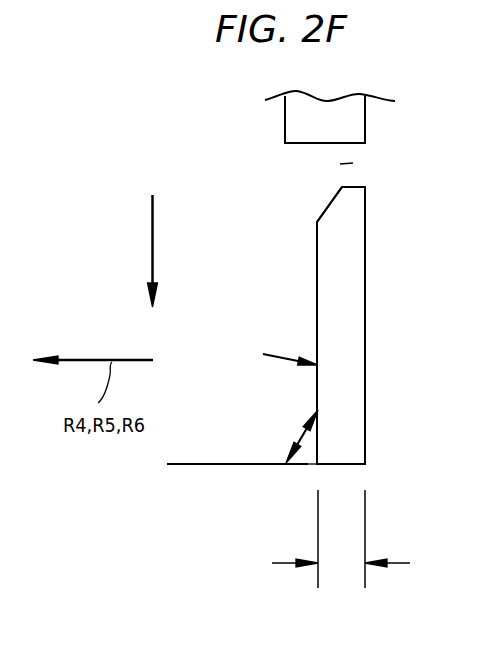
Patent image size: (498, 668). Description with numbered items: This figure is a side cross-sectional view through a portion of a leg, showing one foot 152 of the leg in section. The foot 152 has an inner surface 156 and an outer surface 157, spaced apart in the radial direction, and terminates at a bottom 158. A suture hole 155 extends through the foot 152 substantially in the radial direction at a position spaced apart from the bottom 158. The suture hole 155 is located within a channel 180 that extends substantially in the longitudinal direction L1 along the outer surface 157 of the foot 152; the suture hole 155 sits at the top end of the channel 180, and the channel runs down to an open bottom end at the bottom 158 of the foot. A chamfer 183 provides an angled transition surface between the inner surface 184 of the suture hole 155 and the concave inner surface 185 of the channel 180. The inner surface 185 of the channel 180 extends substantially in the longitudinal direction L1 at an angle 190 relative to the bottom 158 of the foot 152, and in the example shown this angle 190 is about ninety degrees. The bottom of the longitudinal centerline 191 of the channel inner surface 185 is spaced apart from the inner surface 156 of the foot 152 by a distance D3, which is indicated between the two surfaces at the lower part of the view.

The foot 152 is at (366, 130).
The suture hole 155 is at (353, 163).
The inner surface 156 is at (366, 277).
The outer surface 157 is at (285, 130).
The bottom 158 is at (342, 465).
The channel 180 is at (274, 359).
The chamfer 183 is at (330, 203).
The inner surface of suture hole 184 is at (364, 186).
The inner surface of channel 185 is at (317, 303).
The angle 190 is at (292, 441).
The longitudinal centerline 191 is at (316, 465).
The longitudinal direction L1 is at (152, 245).
The distance D3 is at (338, 566).